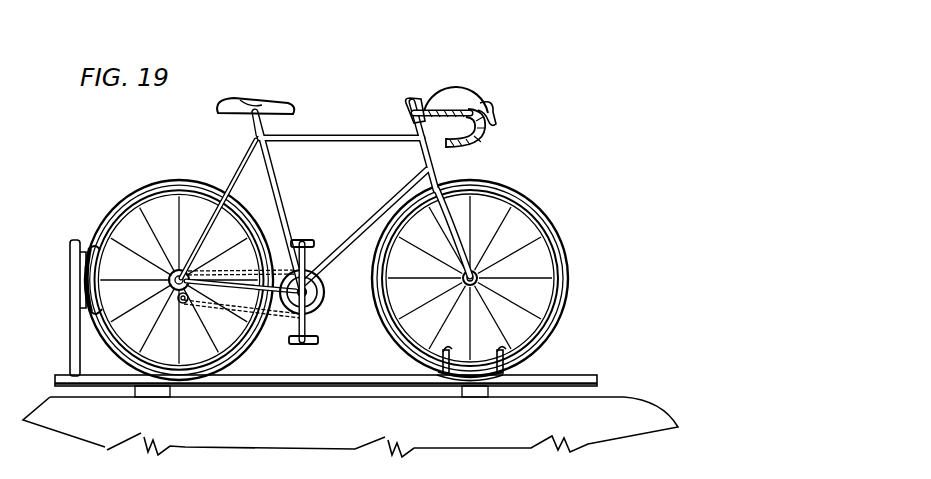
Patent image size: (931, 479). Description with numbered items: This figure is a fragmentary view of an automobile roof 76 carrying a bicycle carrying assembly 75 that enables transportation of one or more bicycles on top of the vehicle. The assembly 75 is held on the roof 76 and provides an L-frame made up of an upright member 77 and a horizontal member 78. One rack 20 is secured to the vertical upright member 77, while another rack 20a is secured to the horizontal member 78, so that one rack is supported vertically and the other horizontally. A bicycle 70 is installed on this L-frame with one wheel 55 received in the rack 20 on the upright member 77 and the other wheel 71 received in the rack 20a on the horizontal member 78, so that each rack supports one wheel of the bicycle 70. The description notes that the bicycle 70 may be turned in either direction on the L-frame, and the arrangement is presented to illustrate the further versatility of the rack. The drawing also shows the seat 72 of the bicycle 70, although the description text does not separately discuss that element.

The bicycle 70 is at (484, 60).
The seat 72 is at (260, 102).
The wheel 71 is at (153, 163).
The wheel 55 is at (505, 183).
The bicycle carrying assembly 75 is at (85, 212).
The rack 20 is at (93, 247).
The upright member 77 is at (70, 284).
The horizontal member 78 is at (374, 377).
The rack 20a is at (522, 359).
The roof 76 is at (414, 430).